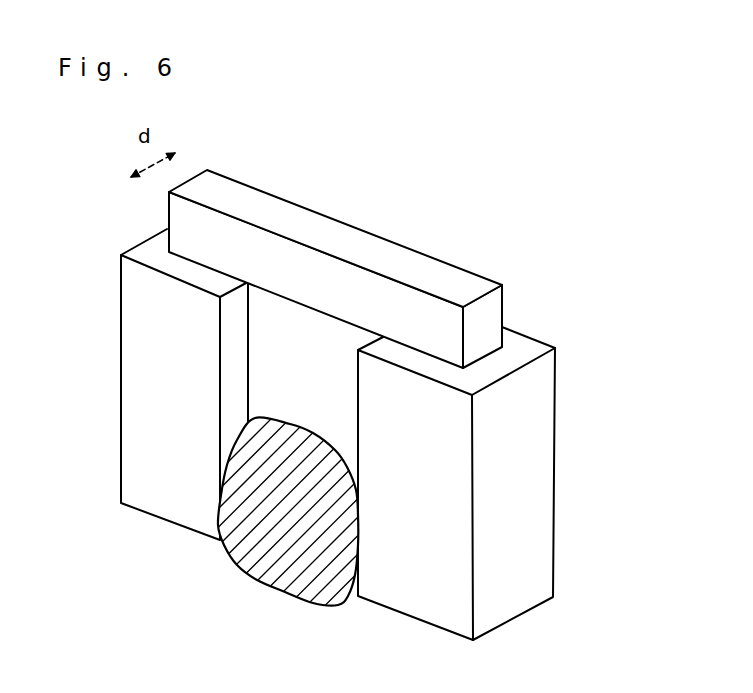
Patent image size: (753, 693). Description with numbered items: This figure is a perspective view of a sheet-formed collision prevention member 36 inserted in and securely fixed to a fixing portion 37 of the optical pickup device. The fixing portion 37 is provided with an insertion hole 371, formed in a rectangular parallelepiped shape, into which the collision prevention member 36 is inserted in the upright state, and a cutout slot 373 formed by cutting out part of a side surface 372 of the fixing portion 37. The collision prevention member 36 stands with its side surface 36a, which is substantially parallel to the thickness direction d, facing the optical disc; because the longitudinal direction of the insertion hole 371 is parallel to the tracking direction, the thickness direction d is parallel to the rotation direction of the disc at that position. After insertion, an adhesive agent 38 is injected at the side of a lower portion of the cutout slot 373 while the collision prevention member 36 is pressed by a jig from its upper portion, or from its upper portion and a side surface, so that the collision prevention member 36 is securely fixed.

The collision prevention member 36 is at (376, 269).
The side surface 36a is at (377, 253).
The fixing portion 37 is at (505, 471).
The insertion hole 371 is at (506, 345).
The side surface 372 is at (160, 315).
The cutout slot 373 is at (263, 398).
The adhesive agent 38 is at (257, 573).